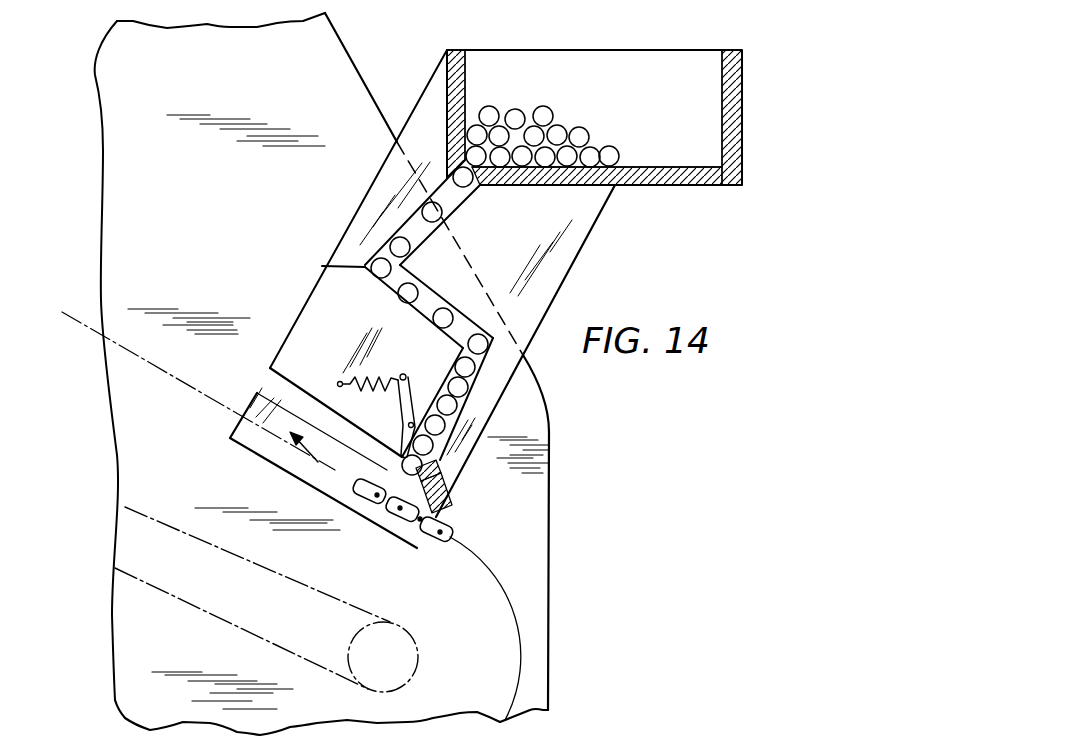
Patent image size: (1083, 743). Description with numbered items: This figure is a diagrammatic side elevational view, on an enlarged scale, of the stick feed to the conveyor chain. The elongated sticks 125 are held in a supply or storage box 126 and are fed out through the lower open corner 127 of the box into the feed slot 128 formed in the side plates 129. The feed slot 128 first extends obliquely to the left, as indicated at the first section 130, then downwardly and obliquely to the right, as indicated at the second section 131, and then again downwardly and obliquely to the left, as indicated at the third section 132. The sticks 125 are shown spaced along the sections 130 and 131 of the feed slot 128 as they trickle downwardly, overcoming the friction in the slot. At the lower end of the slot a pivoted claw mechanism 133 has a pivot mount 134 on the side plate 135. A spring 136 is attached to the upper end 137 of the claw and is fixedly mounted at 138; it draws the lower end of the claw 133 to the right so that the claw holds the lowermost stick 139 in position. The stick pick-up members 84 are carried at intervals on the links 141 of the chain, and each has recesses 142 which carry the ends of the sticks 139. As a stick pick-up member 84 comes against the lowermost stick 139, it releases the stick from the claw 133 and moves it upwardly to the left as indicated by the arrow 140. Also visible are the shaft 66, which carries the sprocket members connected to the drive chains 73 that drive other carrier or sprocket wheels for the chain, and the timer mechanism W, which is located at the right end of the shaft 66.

The supply or storage box 126 is at (733, 48).
The elongated sticks 125 is at (510, 112).
The lower open corner 127 is at (447, 173).
The feed slot 128 is at (457, 202).
The side plates 129 is at (586, 220).
The first section of feed slot 130 is at (324, 265).
The second section of feed slot 131 is at (427, 322).
The third section of feed slot 132 is at (477, 392).
The pivoted claw mechanism 133 is at (407, 435).
The pivot mount 134 is at (415, 424).
The side plate 135 is at (333, 347).
The spring 136 is at (374, 377).
The upper end of claw 137 is at (404, 373).
The fixed spring mount 138 is at (339, 384).
The lowermost stick 139 is at (403, 462).
The arrow 140 is at (287, 472).
The links of the chain 141 is at (392, 522).
The recesses 142 is at (444, 476).
The stick pick-up member 84 is at (432, 490).
The shaft 66 is at (397, 663).
The drive chains 73 is at (302, 662).
The timer mechanism W is at (590, 740).